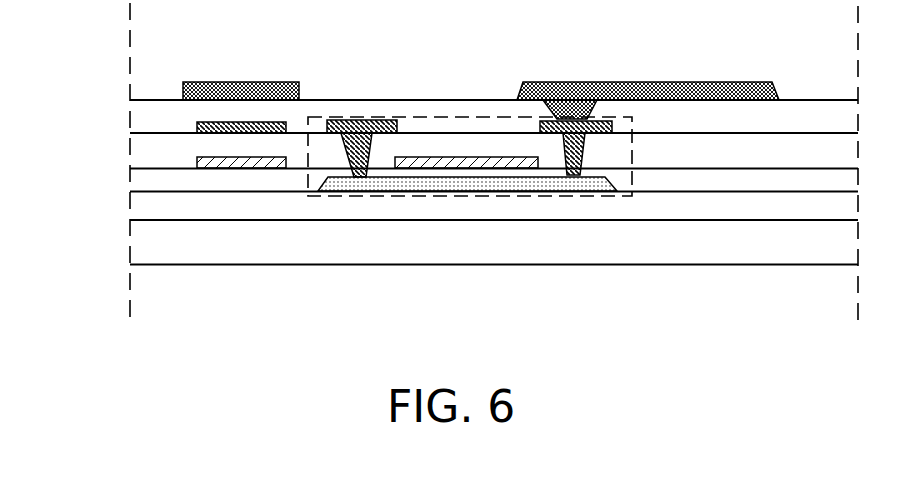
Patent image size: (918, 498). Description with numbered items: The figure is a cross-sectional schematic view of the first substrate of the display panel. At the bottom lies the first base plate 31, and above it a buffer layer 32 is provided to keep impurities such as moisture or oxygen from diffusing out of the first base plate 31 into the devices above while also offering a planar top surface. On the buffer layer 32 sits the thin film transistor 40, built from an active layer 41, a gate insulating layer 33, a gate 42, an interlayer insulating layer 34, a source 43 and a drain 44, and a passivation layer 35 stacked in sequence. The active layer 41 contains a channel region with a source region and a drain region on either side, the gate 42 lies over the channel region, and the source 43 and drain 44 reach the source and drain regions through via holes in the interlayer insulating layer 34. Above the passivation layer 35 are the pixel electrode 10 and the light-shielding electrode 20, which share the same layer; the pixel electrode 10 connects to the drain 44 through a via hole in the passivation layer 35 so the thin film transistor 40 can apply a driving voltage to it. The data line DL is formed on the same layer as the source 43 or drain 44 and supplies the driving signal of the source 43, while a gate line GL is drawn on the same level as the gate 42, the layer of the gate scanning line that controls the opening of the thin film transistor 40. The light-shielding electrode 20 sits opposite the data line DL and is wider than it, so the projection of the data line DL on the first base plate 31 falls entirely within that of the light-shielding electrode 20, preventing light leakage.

The pixel electrode 10 is at (573, 100).
The light-shielding electrode 20 is at (242, 92).
The first base plate 31 is at (154, 244).
The buffer layer 32 is at (154, 209).
The gate insulating layer 33 is at (154, 183).
The interlayer insulating layer 34 is at (154, 147).
The passivation layer 35 is at (154, 114).
The thin film transistor 40 is at (422, 113).
The active layer 41 is at (415, 183).
The gate 42 is at (473, 162).
The source 43 is at (360, 177).
The drain 44 is at (577, 175).
The gate line GL is at (206, 162).
The data line DL is at (235, 128).